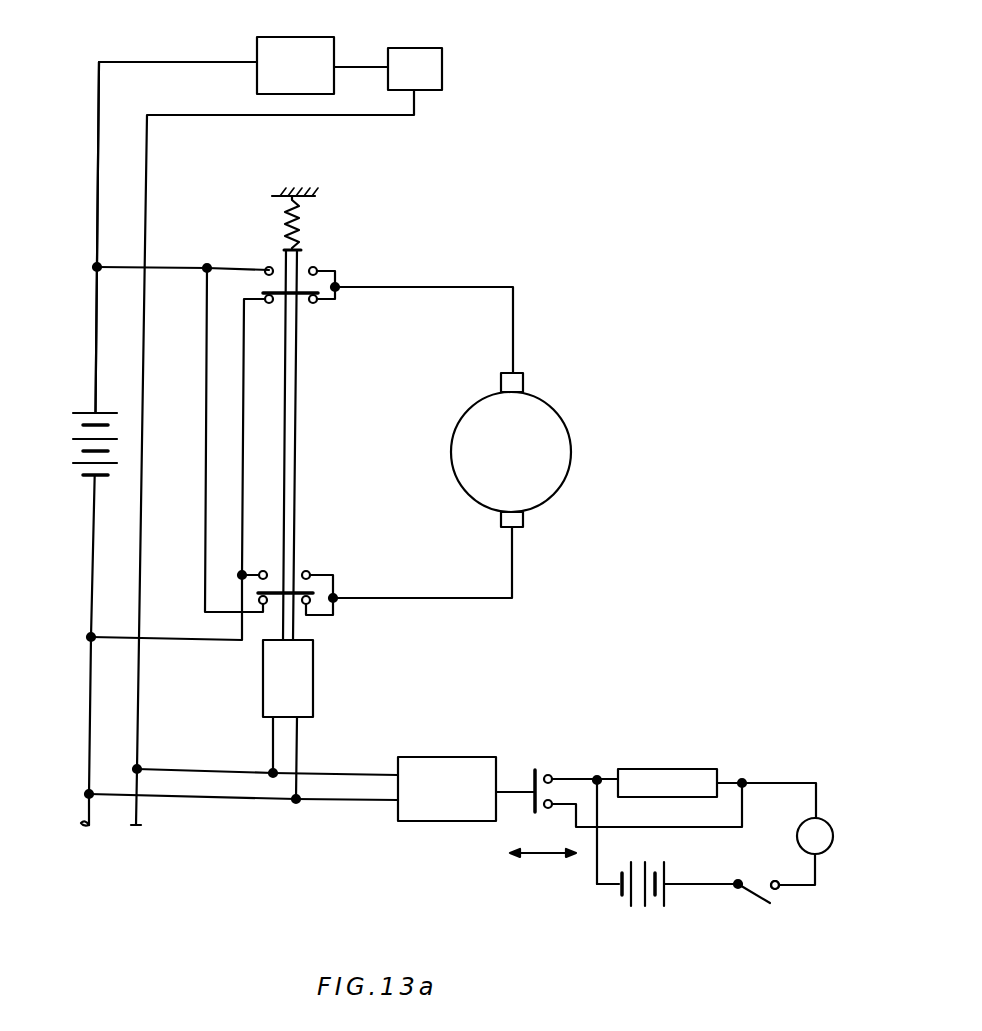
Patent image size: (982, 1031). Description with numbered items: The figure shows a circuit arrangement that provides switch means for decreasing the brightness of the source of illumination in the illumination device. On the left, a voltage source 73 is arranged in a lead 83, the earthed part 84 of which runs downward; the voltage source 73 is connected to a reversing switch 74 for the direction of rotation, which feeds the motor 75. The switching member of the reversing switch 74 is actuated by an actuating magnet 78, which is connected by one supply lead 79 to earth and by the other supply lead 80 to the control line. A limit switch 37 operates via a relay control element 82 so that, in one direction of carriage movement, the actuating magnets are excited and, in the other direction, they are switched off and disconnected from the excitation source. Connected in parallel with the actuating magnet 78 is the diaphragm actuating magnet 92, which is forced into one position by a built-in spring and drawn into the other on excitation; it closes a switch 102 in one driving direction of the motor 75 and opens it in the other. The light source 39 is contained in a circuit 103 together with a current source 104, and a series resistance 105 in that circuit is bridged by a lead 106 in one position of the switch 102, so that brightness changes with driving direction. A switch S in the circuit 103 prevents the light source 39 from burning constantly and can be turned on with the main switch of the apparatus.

The relay control element 82 is at (307, 27).
The limit switch 37 is at (444, 59).
The lead 83 is at (96, 182).
The voltage source 73 is at (75, 447).
The part of lead 84 is at (88, 722).
The reversing switch 74 is at (314, 436).
The motor 75 is at (552, 423).
The actuating magnet 78 is at (314, 684).
The supply lead 80 is at (192, 771).
The supply lead 79 is at (247, 800).
The diaphragm actuating magnet 92 is at (410, 823).
The switch 102 is at (546, 762).
The series resistance 105 is at (683, 772).
The shunt lead 106 is at (705, 828).
The light source 39 is at (831, 836).
The current source 104 is at (632, 903).
The circuit 103 is at (712, 898).
The switch S is at (774, 895).